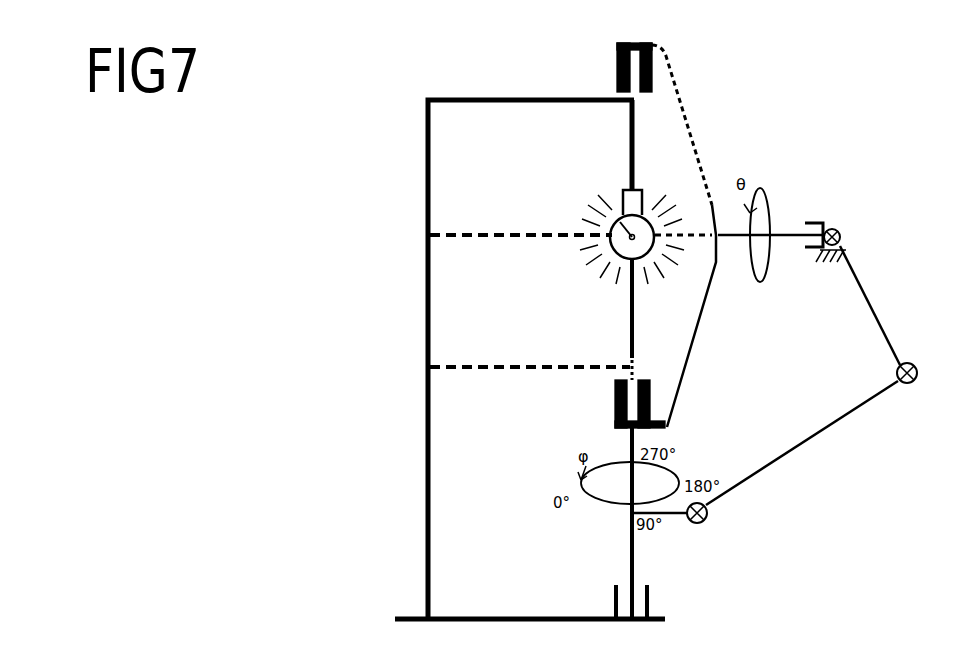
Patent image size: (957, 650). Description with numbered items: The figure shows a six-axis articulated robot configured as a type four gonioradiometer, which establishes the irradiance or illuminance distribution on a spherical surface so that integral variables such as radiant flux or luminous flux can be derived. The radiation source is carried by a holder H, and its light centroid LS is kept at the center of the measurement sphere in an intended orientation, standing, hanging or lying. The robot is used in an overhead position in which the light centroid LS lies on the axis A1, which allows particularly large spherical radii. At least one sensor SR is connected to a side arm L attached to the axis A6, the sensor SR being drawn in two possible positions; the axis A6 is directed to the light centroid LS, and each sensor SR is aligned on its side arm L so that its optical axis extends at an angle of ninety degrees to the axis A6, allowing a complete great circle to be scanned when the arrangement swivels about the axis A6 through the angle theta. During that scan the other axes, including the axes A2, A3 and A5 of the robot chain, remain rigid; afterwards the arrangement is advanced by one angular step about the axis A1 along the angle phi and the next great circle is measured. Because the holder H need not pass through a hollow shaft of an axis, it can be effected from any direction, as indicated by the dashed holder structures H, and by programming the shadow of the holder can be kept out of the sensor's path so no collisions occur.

The holder H is at (630, 137).
The light centroid LS is at (616, 214).
The sensor SR is at (615, 62).
The side arm L is at (687, 118).
The axis A1 is at (650, 602).
The axis A2 is at (713, 513).
The axis A3 is at (919, 364).
The axis A5 is at (837, 235).
The axis A6 is at (811, 222).